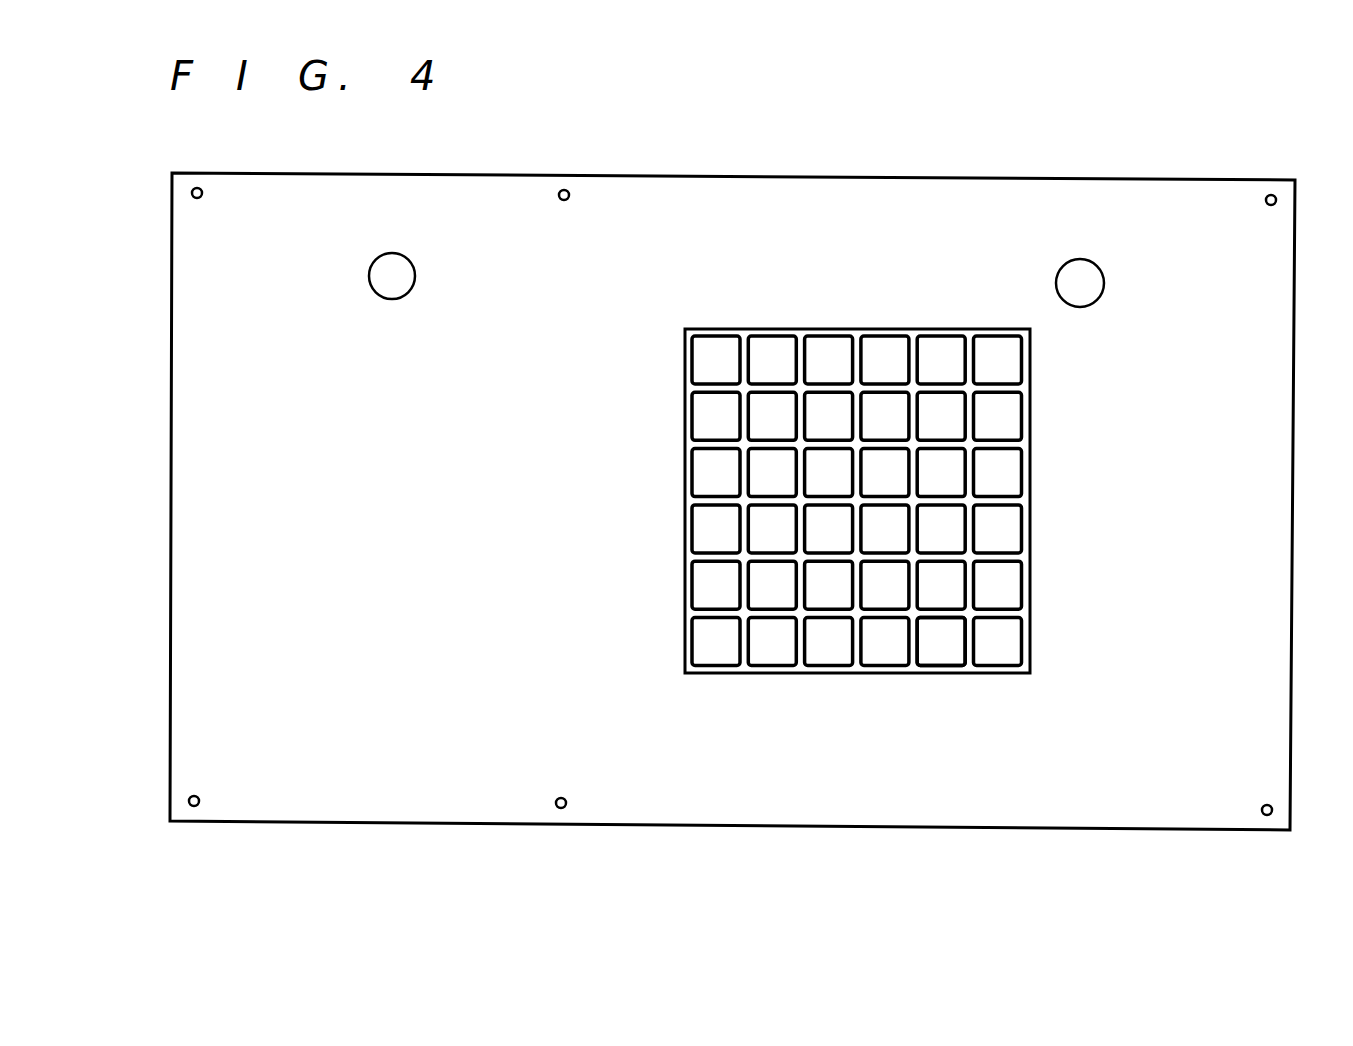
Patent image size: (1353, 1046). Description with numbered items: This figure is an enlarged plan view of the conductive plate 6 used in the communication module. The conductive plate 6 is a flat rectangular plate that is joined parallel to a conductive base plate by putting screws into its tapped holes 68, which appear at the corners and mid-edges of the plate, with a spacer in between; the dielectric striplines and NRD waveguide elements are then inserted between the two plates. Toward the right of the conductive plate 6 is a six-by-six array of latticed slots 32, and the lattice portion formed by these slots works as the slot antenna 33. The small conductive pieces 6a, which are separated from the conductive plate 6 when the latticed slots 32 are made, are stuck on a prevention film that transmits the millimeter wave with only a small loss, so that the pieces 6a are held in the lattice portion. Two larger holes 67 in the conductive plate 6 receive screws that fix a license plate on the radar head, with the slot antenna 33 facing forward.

The conductive plate 6 is at (617, 800).
The small conductive pieces 6a is at (937, 645).
The latticed slots 32 is at (987, 555).
The slot antenna 33 is at (1035, 477).
The holes 67 is at (392, 288).
The tapped holes 68 is at (203, 196).